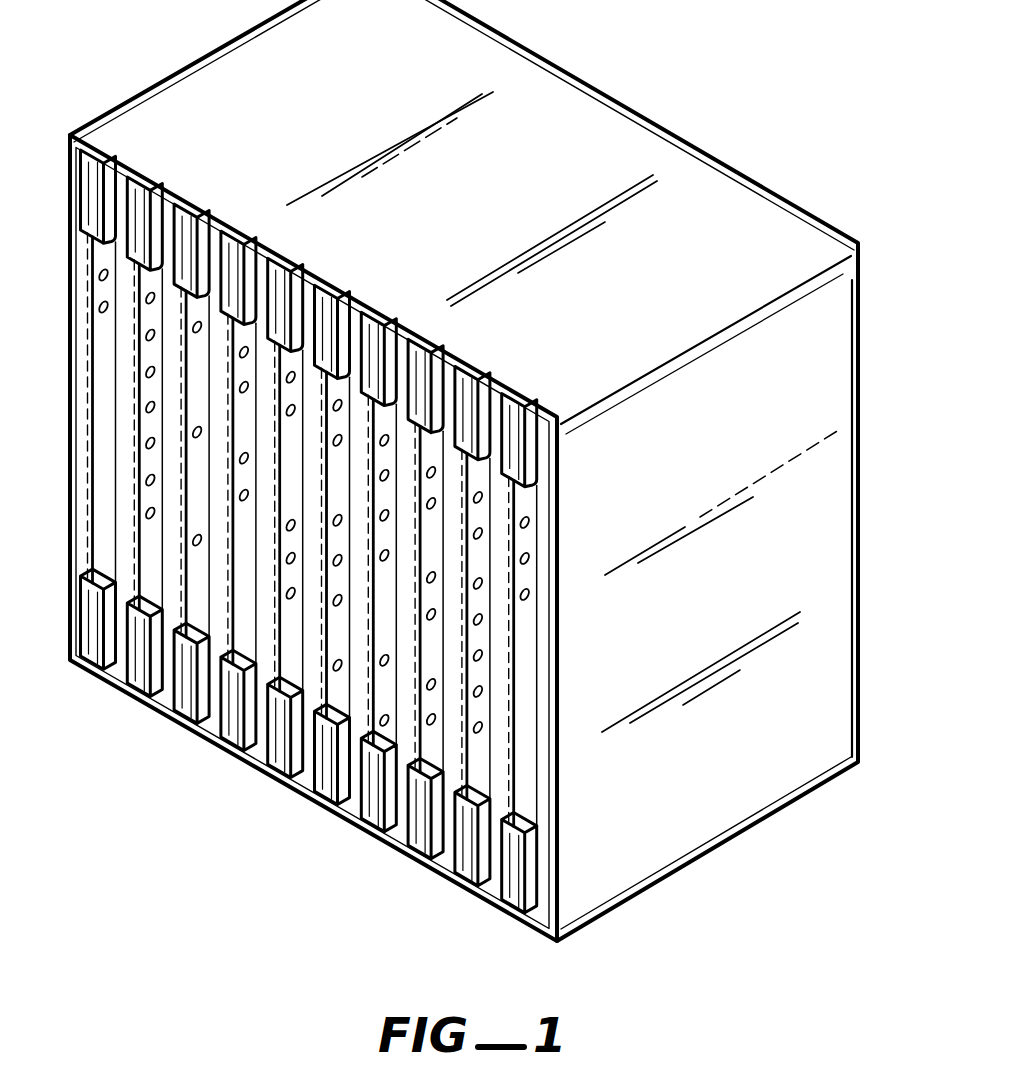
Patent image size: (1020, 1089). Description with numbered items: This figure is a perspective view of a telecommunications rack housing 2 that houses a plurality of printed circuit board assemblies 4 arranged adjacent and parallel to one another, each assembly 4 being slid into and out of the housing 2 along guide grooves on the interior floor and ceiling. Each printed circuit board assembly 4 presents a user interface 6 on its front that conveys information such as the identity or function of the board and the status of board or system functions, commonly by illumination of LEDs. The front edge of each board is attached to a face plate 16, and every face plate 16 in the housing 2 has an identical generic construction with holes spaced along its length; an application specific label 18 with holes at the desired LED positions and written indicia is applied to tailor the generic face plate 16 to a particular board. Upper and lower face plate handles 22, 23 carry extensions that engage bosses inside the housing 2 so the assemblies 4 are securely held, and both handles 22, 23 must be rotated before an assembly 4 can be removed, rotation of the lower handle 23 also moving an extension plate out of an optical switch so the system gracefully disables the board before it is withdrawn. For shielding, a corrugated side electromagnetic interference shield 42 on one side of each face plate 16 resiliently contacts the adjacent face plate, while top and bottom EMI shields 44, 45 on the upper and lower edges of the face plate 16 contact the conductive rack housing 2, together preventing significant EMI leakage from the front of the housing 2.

The telecommunications rack housing 2 is at (585, 133).
The printed circuit board assembly 4 is at (460, 878).
The user interface 6 is at (548, 632).
The face plate 16 is at (557, 783).
The application specific label 18 is at (549, 507).
The upper face plate handle 22 is at (350, 295).
The lower face plate handle 23 is at (310, 790).
The corrugated side electromagnetic interference shield 42 is at (432, 455).
The top EMI shield 44 is at (167, 197).
The bottom EMI shield 45 is at (155, 700).